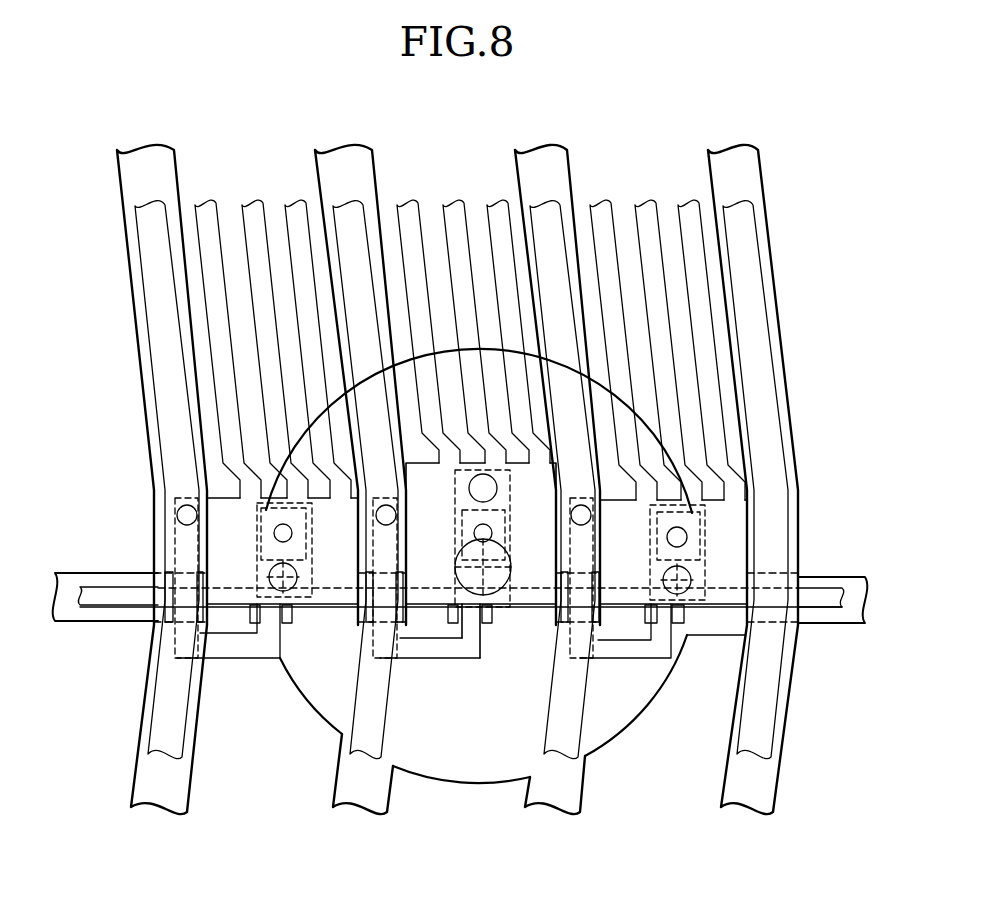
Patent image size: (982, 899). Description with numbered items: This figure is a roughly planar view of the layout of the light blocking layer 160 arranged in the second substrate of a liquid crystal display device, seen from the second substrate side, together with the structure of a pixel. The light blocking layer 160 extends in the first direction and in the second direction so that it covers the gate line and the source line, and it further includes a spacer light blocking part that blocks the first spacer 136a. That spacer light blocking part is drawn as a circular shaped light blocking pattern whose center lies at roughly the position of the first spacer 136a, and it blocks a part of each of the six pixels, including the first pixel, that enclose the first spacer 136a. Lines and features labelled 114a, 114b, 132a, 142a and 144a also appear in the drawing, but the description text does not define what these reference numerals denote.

The light blocking layer 160 is at (158, 168).
The first gate electrode line 114a is at (347, 213).
The data line 132a is at (452, 215).
The second gate electrode line 114b is at (542, 217).
The first spacer 136a is at (500, 578).
The drain electrode 142a is at (488, 617).
The source electrode 144a is at (417, 650).